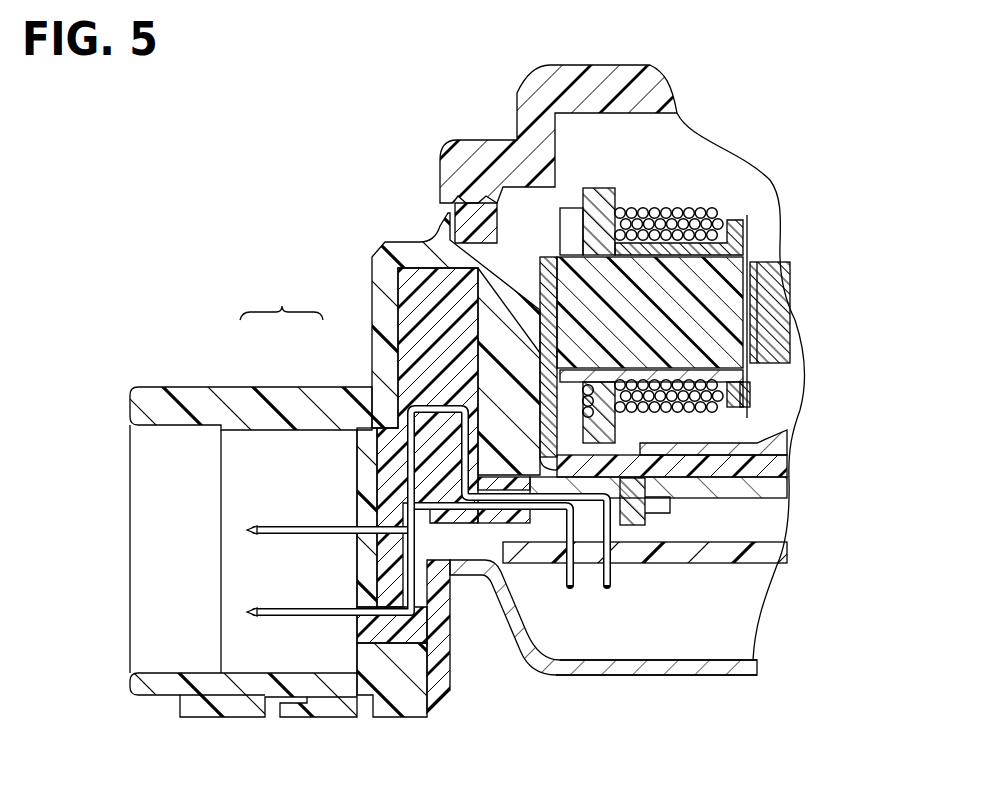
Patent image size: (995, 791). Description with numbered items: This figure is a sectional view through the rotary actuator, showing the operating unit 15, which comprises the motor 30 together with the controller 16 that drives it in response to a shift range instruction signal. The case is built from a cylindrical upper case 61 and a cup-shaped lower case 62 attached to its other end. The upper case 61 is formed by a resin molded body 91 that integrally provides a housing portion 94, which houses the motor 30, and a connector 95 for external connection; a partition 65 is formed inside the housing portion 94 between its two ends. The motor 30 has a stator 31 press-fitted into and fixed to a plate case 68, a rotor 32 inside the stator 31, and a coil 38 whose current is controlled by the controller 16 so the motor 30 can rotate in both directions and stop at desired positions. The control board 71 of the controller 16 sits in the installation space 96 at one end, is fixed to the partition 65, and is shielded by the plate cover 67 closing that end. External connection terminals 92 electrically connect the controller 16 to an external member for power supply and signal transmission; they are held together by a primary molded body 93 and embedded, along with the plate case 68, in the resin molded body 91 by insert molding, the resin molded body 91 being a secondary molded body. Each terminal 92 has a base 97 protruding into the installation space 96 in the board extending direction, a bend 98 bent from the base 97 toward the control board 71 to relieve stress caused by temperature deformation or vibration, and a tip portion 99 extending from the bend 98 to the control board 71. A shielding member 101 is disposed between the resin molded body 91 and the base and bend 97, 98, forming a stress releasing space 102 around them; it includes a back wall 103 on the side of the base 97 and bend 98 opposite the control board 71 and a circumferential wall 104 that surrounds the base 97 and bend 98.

The operating unit 15 is at (615, 147).
The controller 16 is at (736, 569).
The motor 30 is at (662, 204).
The stator 31 is at (665, 315).
The rotor 32 is at (793, 340).
The coil 38 is at (697, 214).
The upper case 61 is at (403, 237).
The lower case 62 is at (540, 92).
The partition 65 is at (770, 488).
The plate cover 67 is at (730, 677).
The plate case 68 is at (770, 468).
The control board 71 is at (770, 552).
The resin molded body 91 is at (281, 300).
The external connection terminals 92 is at (250, 530).
The primary molded body 93 is at (405, 627).
The housing portion 94 is at (500, 357).
The connector 95 is at (268, 412).
The installation space 96 is at (700, 622).
The base 97 is at (498, 598).
The bend 98 is at (541, 510).
The tip portion 99 is at (566, 514).
The shielding member 101 is at (655, 517).
The stress releasing space 102 is at (585, 500).
The back wall 103 is at (560, 455).
The circumferential wall 104 is at (633, 514).